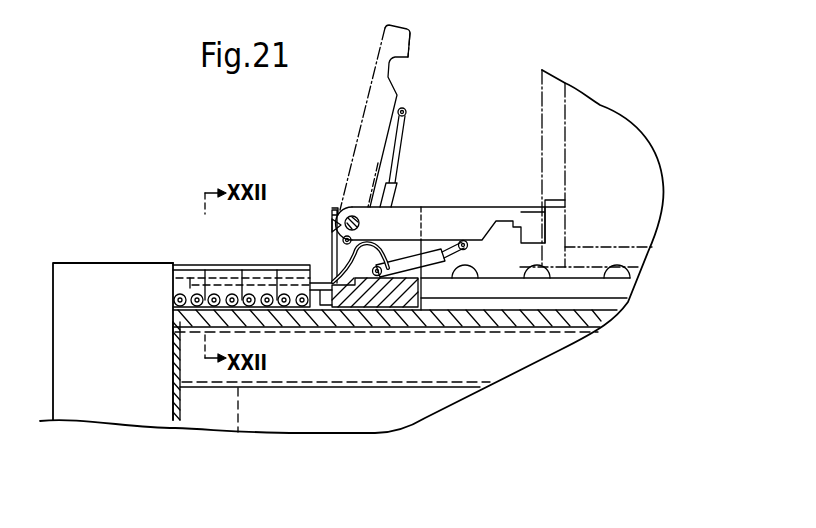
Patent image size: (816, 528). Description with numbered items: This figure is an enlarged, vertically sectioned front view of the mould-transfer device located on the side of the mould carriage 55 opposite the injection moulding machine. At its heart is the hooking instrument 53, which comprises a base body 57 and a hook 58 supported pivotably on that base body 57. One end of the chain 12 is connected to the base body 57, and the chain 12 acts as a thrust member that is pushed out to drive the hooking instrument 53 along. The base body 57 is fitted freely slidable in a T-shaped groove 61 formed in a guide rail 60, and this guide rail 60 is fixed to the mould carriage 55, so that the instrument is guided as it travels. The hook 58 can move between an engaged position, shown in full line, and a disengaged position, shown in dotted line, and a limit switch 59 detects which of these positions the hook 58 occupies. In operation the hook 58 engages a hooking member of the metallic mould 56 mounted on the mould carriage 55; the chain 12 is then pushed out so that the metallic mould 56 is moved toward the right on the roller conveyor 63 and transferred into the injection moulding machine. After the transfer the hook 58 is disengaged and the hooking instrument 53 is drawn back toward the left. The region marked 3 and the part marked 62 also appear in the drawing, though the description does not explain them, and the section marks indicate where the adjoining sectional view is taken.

The housing 3 is at (60, 252).
The chain 12 is at (221, 288).
The hooking instrument 53 is at (446, 172).
The mould carriage 55 is at (425, 375).
The metallic mould 56 is at (603, 108).
The base body 57 is at (385, 296).
The hook 58 is at (483, 217).
The limit switch 59 is at (332, 249).
The guide rail 60 is at (477, 289).
The T-shaped groove 61 is at (452, 303).
The bracket 62 is at (508, 237).
The roller conveyor 63 is at (615, 267).